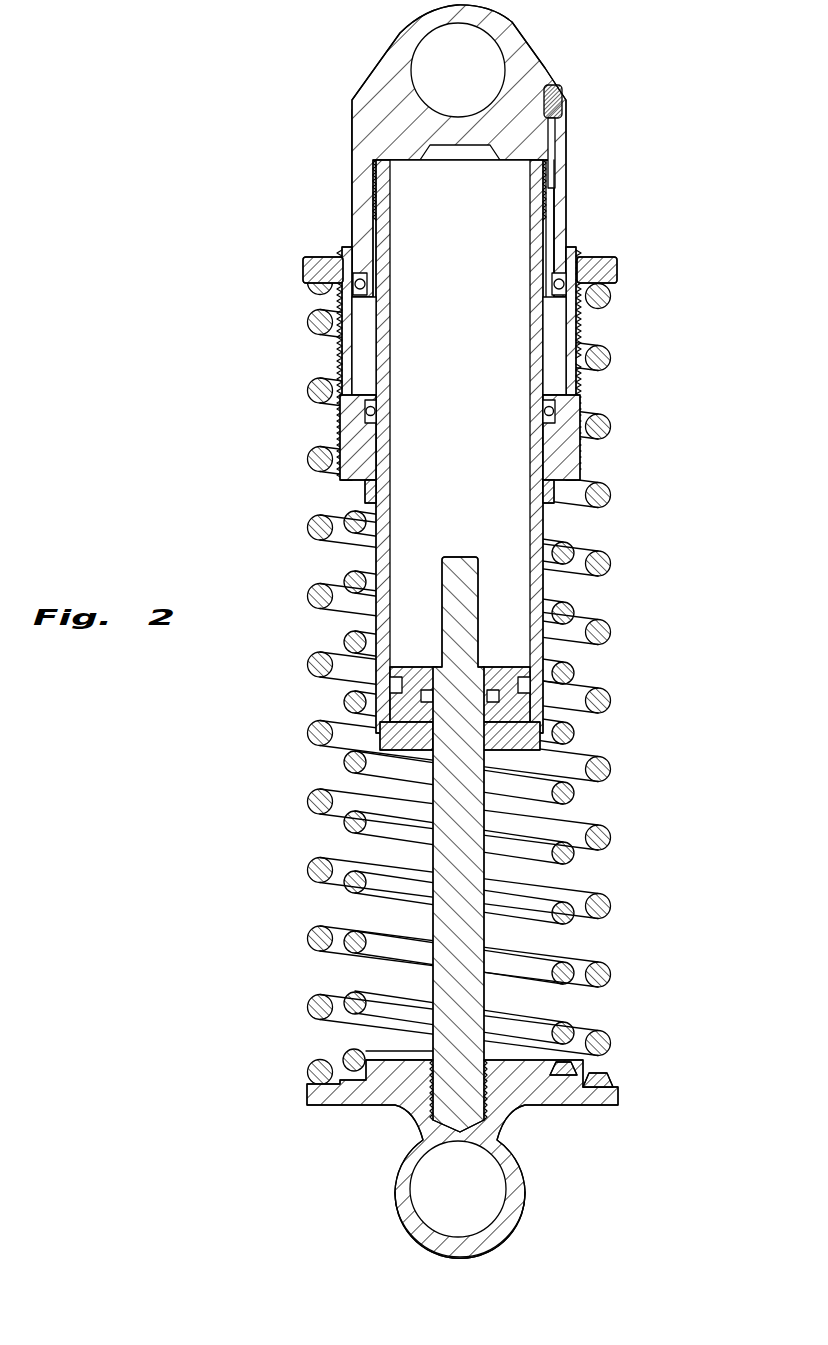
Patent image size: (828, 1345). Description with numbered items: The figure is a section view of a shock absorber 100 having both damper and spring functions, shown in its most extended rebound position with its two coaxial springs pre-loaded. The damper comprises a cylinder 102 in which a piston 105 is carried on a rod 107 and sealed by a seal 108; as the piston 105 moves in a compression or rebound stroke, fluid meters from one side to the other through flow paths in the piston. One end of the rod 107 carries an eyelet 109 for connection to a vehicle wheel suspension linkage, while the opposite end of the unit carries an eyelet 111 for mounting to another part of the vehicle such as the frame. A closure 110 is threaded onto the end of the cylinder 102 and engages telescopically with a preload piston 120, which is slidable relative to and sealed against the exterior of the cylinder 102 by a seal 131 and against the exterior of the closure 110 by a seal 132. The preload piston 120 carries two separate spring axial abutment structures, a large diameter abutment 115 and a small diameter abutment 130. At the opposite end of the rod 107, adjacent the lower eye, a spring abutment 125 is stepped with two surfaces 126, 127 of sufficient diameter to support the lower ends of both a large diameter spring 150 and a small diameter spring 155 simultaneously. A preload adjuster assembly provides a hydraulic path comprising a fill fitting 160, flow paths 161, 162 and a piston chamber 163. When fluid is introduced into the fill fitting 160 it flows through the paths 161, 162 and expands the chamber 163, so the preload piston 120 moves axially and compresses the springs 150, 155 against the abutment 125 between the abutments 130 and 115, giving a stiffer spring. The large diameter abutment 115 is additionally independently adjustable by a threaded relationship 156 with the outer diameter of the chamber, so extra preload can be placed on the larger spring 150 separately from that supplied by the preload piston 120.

The shock absorber 100 is at (176, 120).
The cylinder 102 is at (540, 590).
The piston 105 is at (545, 657).
The rod 107 is at (462, 954).
The seal 108 is at (530, 683).
The eyelet 109 is at (478, 1210).
The closure 110 is at (517, 45).
The eyelet 111 is at (430, 68).
The large diameter abutment 115 is at (614, 278).
The preload piston 120 is at (565, 468).
The spring abutment 125 is at (616, 1101).
The surface 126 is at (610, 1043).
The surface 127 is at (600, 1075).
The small diameter abutment 130 is at (560, 493).
The seal 131 is at (556, 412).
The seal 132 is at (568, 297).
The large diameter spring 150 is at (612, 767).
The small diameter spring 155 is at (574, 795).
The threaded relationship 156 is at (578, 380).
The fill fitting 160 is at (562, 110).
The flow path 161 is at (548, 222).
The flow path 162 is at (556, 140).
The piston chamber 163 is at (556, 337).